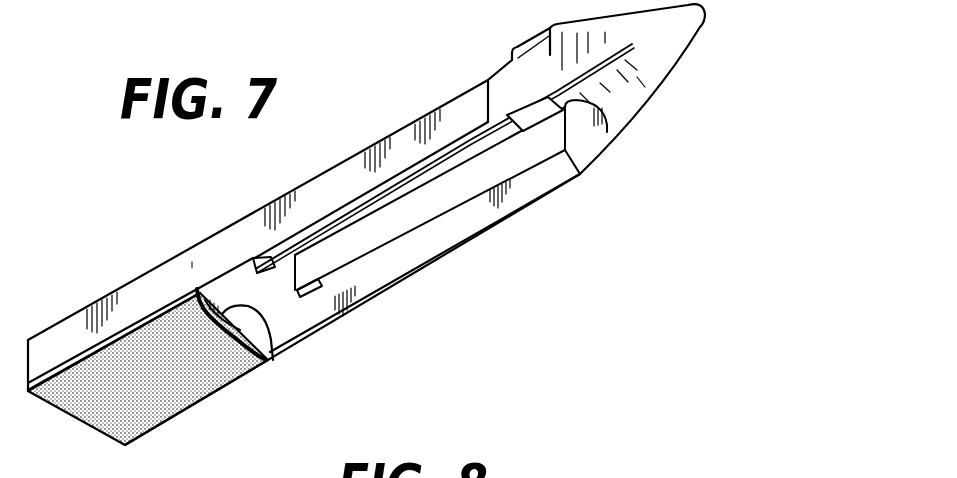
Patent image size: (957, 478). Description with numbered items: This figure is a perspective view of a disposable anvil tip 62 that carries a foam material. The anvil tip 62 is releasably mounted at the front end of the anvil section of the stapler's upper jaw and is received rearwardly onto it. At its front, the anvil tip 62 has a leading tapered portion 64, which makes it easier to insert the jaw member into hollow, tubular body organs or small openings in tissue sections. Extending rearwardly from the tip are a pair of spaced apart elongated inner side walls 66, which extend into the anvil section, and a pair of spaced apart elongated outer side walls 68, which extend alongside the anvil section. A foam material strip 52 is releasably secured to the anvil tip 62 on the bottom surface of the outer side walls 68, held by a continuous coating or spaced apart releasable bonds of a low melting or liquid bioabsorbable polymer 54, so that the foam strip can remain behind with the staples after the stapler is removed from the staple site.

The foam material strip 52 is at (97, 403).
The bioabsorbable polymer 54 is at (280, 340).
The anvil tip 62 is at (403, 284).
The leading tapered portion 64 is at (623, 88).
The inner side walls 66 is at (341, 226).
The outer side walls 68 is at (192, 268).